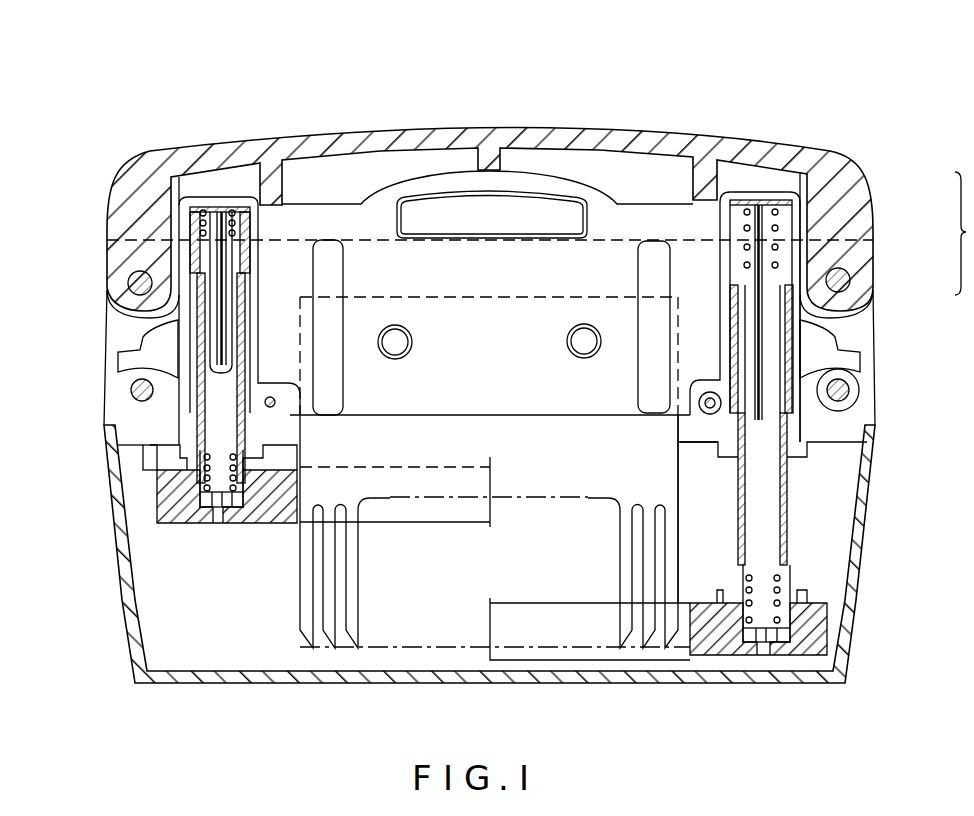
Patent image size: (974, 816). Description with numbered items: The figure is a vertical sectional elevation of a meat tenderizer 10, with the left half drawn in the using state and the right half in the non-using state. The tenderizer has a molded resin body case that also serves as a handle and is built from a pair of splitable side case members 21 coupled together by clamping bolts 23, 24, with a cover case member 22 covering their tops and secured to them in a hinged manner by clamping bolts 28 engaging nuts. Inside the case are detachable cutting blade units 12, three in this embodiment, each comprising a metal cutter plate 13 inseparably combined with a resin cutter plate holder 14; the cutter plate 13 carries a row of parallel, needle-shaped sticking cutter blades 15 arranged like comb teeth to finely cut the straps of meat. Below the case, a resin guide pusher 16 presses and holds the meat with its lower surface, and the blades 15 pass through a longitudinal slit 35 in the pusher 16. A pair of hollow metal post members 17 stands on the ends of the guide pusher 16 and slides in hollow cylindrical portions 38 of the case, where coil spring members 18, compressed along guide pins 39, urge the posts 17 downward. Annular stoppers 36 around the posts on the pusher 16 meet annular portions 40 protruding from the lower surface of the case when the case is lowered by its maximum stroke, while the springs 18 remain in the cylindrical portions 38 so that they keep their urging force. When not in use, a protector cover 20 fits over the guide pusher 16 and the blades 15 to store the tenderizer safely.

The meat tenderizer 10 is at (688, 90).
The cutting blade unit 12 is at (668, 180).
The cutter plate 13 is at (520, 440).
The cutter plate holder 14 is at (510, 332).
The sticking cutter blades 15 is at (648, 640).
The guide pusher 16 is at (192, 528).
The post members 17 is at (198, 440).
The spring members 18 is at (238, 233).
The protector cover 20 is at (357, 682).
The side case members 21 is at (878, 340).
The cover case member 22 is at (875, 234).
The clamping bolts 23 is at (130, 396).
The clamping bolts 24 is at (264, 404).
The clamping bolts 28 is at (128, 285).
The slit 35 is at (573, 657).
The annular stoppers 36 is at (263, 460).
The hollow cylindrical portions 38 is at (737, 285).
The guide pins 39 is at (218, 298).
The annular portions 40 is at (180, 452).